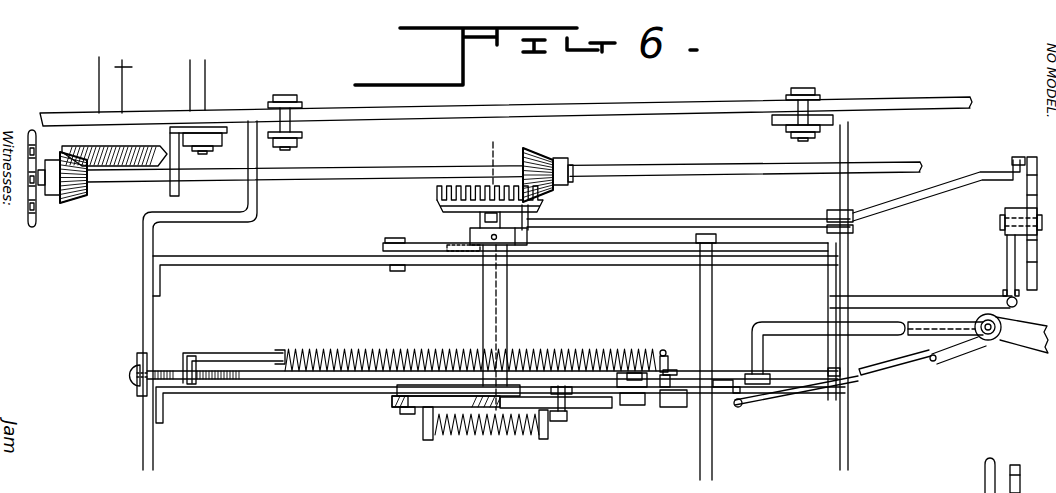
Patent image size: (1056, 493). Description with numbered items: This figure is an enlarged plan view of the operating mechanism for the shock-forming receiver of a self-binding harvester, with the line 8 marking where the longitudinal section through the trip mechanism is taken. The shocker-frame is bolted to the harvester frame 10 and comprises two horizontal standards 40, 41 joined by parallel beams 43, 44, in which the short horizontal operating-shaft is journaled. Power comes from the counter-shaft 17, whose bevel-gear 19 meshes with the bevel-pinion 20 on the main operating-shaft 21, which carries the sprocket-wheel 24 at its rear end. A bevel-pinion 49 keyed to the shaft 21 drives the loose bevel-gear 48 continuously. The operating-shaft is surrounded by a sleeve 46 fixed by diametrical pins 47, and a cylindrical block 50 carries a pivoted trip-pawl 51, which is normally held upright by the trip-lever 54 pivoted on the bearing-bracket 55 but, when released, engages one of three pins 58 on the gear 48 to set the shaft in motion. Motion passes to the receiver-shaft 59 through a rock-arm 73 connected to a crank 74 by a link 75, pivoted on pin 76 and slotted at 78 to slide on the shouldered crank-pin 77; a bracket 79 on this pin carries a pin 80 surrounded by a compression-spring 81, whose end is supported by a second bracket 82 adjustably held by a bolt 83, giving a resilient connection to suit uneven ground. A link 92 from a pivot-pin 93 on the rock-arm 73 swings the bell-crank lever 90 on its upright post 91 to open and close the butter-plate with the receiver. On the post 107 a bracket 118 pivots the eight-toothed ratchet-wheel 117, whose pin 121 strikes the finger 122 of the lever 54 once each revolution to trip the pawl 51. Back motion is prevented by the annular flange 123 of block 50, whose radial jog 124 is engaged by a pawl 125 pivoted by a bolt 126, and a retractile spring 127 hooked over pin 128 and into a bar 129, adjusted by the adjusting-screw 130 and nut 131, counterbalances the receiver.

The section line 8 is at (502, 463).
The frame 10 is at (605, 105).
The counter-shaft 17 is at (152, 84).
The bevel-gear 19 is at (135, 168).
The bevel-pinion 20 is at (74, 204).
The main operating-shaft 21 is at (898, 165).
The sprocket-wheel 24 is at (32, 229).
The horizontal standard 40 is at (849, 448).
The horizontal standard 41 is at (147, 450).
The parallel beam 43 is at (495, 264).
The parallel beam 44 is at (268, 394).
The sleeve 46 is at (508, 303).
The diametrical pins 47 is at (484, 264).
The bevel-gear 48 is at (476, 188).
The bevel-pinion 49 is at (536, 150).
The cylindrical block 50 is at (472, 237).
The trip-pawl 51 is at (516, 230).
The trip-lever 54 is at (701, 220).
The bearing-bracket 55 is at (855, 229).
The pins 58 is at (470, 214).
The receiver-shaft 59 is at (714, 460).
The rock-arm 73 is at (656, 396).
The crank 74 is at (430, 386).
The link 75 is at (625, 400).
The pivot-pin 76 is at (660, 370).
The crank-pin 77 is at (392, 402).
The longitudinal slot 78 is at (424, 406).
The bracket 79 is at (428, 441).
The pin 80 is at (549, 430).
The compression-spring 81 is at (513, 437).
The second bracket 82 is at (595, 409).
The bolt 83 is at (556, 421).
The bell-crank lever 90 is at (1020, 344).
The upright post 91 is at (793, 324).
The link 92 is at (858, 381).
The pivot-pin 93 is at (680, 407).
The upstanding post 107 is at (922, 297).
The ratchet-wheel 117 is at (1027, 201).
The bracket 118 is at (1008, 258).
The pin 121 is at (1023, 157).
The finger 122 is at (1015, 170).
The annular flange 123 is at (545, 249).
The radial jog 124 is at (480, 256).
The pawl 125 is at (420, 242).
The bolt 126 is at (397, 271).
The retractile spring 127 is at (562, 349).
The pin 128 is at (665, 350).
The bar 129 is at (233, 354).
The adjusting-screw 130 is at (163, 370).
The nut 131 is at (195, 385).